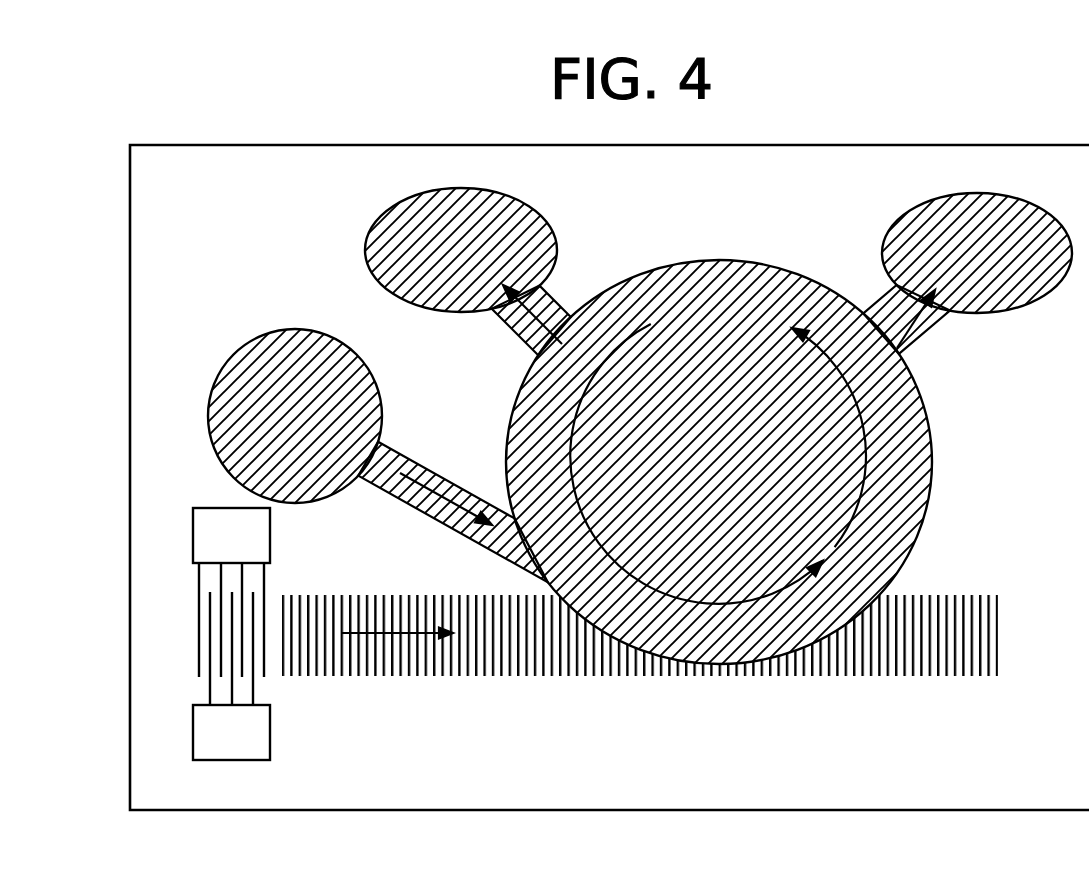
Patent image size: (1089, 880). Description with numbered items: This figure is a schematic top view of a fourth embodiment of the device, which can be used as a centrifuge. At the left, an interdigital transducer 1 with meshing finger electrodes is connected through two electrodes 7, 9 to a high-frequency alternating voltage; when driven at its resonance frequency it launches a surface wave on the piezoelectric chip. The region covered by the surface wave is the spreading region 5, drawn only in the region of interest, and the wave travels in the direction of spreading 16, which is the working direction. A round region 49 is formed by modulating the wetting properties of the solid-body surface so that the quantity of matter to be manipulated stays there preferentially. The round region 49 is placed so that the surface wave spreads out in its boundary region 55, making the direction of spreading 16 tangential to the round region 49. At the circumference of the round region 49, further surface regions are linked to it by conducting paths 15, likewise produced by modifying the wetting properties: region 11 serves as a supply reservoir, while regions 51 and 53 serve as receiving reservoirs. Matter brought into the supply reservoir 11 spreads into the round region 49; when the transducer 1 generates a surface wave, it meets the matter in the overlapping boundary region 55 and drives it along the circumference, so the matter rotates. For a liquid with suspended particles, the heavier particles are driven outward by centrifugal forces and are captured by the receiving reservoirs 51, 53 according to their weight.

The interdigital transducer 1 is at (163, 634).
The region covered by the surface wave 5 is at (497, 656).
The electrode 7 is at (213, 732).
The electrode 9 is at (213, 537).
The supply reservoir 11 is at (266, 340).
The conducting paths 15 is at (447, 512).
The direction of spreading 16 is at (374, 634).
The round region 49 is at (770, 575).
The receiving reservoir 51 is at (998, 294).
The receiving reservoir 53 is at (421, 310).
The boundary region 55 is at (703, 640).